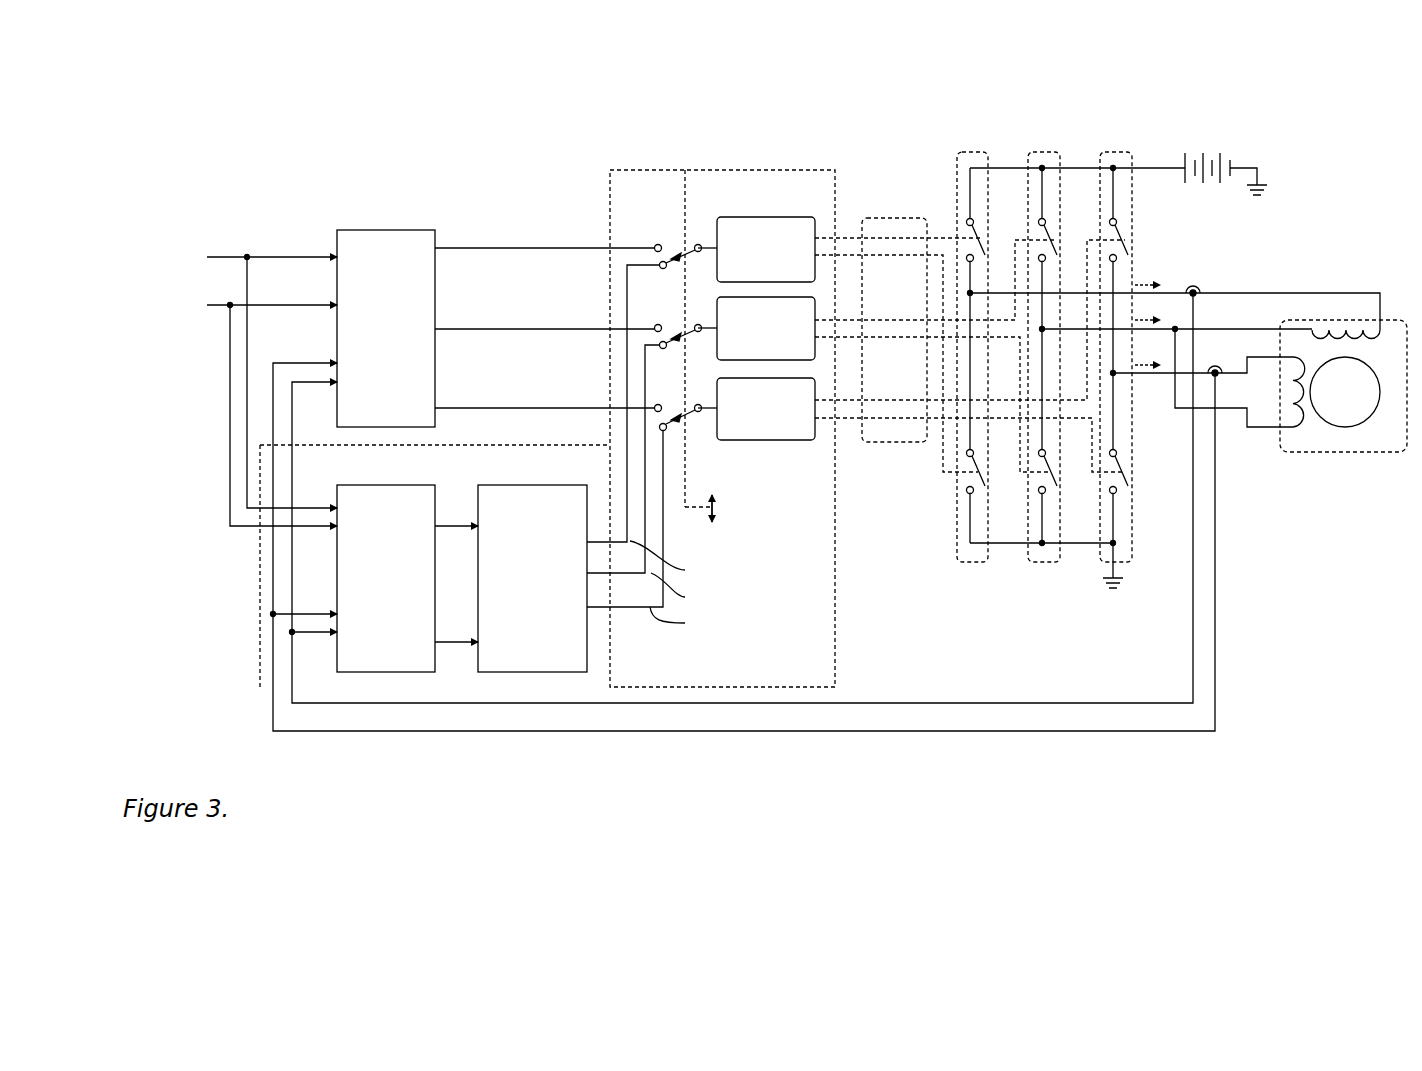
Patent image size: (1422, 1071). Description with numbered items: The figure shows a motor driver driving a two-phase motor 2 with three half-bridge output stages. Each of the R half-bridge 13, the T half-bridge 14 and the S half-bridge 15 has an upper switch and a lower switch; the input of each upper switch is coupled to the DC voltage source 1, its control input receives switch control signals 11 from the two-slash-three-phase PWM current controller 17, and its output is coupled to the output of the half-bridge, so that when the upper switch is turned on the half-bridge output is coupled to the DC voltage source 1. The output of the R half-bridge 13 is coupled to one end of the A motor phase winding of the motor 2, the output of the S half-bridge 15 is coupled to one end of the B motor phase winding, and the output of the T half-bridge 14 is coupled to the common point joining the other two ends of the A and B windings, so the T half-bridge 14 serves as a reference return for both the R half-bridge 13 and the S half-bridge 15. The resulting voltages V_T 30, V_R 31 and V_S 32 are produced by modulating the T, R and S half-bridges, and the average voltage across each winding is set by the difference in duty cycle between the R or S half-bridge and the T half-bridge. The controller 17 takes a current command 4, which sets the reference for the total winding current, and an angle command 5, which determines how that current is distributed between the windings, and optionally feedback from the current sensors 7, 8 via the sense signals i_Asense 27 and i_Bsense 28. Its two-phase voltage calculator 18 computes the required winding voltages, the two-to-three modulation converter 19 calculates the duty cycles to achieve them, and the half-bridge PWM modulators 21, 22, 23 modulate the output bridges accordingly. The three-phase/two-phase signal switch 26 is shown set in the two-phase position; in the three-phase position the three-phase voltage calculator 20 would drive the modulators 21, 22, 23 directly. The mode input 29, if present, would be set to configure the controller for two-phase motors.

The DC voltage source 1 is at (1190, 153).
The motor 2 is at (1345, 452).
The current command 4 is at (232, 374).
The angle command 5 is at (232, 407).
The current sensor 7 is at (1193, 288).
The current sensor 8 is at (1216, 368).
The switch control signals 11 is at (895, 442).
The R half-bridge 13 is at (970, 152).
The T half-bridge 14 is at (1042, 152).
The S half-bridge 15 is at (1113, 152).
The 2/3-Phase PWM Current Controller 17 is at (783, 168).
The 2-phase Voltage Calculator 18 is at (380, 505).
The 2-3 Modulation Converter 19 is at (555, 505).
The 3-phase Voltage Calculator 20 is at (407, 245).
The half-bridge PWM modulator 21 is at (790, 217).
The half-bridge PWM modulator 22 is at (806, 351).
The half-bridge PWM modulator 23 is at (780, 440).
The 3-phase/2-phase signal switch 26 is at (688, 250).
The sense signal i_Asense 27 is at (943, 703).
The sense signal i_Bsense 28 is at (943, 732).
The 3-phase/2-phase mode input 29 is at (716, 507).
The voltage V_T 30 is at (1233, 410).
The voltage V_R 31 is at (1265, 293).
The voltage V_S 32 is at (1157, 378).